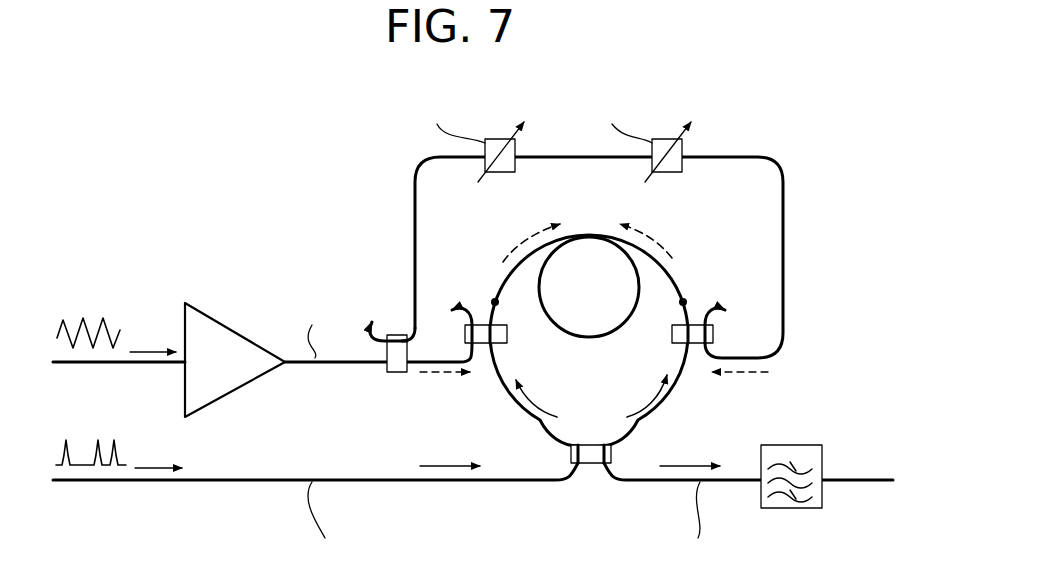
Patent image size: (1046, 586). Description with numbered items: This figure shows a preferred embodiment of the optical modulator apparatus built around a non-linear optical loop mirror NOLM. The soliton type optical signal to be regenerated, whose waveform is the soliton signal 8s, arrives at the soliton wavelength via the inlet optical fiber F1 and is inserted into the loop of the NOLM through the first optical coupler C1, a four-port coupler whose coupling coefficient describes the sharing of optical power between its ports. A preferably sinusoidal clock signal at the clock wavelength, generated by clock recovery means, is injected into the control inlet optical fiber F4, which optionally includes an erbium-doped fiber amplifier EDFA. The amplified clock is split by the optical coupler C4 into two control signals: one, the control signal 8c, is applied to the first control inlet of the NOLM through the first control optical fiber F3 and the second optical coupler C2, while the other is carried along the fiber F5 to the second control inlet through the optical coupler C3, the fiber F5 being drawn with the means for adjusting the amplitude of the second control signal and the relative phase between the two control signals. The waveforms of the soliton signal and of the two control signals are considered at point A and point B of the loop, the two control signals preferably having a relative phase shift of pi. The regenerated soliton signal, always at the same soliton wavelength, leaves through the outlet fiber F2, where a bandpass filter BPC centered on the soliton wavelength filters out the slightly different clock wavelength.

The control signal 8c is at (88, 323).
The soliton signal 8s is at (76, 442).
The control inlet optical fiber F4 is at (126, 370).
The erbium-doped fiber amplifier EDFA is at (238, 350).
The first control optical fiber F3 is at (413, 372).
The optical coupler C4 is at (397, 334).
The feedback fiber with phase and attenuation adjusters F5 is at (785, 322).
The non-linear optical loop mirror NOLM is at (589, 335).
The second optical coupler C2 is at (485, 345).
The optical coupler C3 is at (692, 345).
The point A is at (493, 300).
The point B is at (686, 300).
The first optical coupler C1 is at (571, 453).
The inlet optical fiber F1 is at (381, 478).
The outlet fiber F2 is at (648, 476).
The bandpass filter BPC is at (805, 455).